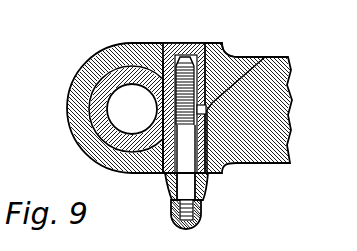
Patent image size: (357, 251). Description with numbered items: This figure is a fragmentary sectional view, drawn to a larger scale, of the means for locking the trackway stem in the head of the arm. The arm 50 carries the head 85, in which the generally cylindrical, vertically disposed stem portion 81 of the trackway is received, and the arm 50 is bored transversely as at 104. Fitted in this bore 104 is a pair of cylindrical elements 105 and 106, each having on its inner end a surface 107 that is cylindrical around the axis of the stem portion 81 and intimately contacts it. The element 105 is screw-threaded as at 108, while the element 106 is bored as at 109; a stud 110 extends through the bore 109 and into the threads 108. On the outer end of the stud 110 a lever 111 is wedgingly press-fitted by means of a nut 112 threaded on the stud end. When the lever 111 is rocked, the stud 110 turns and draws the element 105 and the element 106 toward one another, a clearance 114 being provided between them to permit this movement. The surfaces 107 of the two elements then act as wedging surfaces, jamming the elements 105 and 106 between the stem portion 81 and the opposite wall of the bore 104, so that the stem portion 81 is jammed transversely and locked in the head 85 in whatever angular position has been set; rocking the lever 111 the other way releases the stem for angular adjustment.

The arm 50 is at (290, 63).
The head 85 is at (105, 58).
The stem portion 81 is at (107, 100).
The cylindrical element 105 is at (169, 43).
The surface 107 is at (161, 105).
The threads 108 is at (199, 61).
The stud 110 is at (187, 159).
The bore 104 is at (222, 50).
The clearance 114 is at (262, 58).
The lever 111 is at (206, 191).
The nut 112 is at (197, 208).
The cylindrical element 106 is at (162, 174).
The bore 109 is at (162, 168).